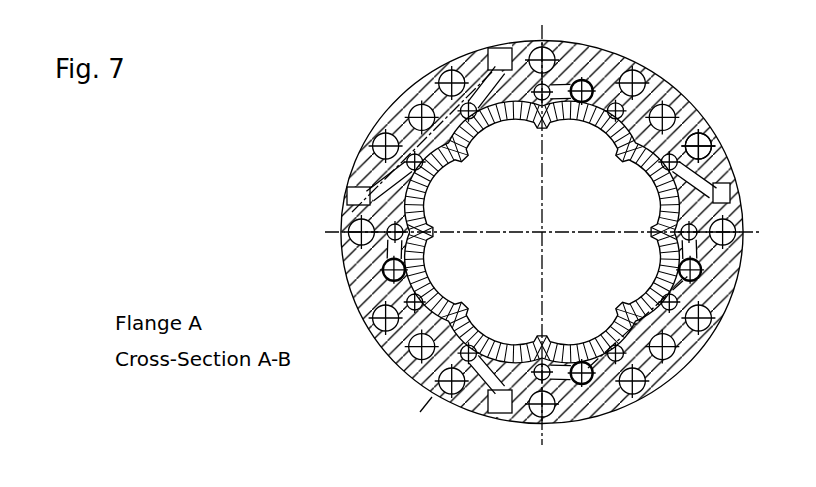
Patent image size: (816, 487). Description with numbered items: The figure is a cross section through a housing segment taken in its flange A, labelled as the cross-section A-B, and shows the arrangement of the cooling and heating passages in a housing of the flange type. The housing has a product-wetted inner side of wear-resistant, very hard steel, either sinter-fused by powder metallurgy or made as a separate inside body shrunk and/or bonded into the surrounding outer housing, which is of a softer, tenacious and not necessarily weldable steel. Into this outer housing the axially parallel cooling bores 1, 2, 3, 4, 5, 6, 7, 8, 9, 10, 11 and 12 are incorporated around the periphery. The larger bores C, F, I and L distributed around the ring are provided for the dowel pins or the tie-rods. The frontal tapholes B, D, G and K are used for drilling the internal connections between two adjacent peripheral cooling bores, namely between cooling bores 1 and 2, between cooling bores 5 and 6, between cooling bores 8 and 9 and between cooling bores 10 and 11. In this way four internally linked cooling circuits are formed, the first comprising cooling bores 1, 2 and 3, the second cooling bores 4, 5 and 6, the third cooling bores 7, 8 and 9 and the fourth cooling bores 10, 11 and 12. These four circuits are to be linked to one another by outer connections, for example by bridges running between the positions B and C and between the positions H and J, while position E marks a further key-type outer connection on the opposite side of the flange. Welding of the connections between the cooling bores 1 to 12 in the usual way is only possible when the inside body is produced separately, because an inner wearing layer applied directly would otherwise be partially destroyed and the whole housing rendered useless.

The cooling bore 1 is at (467, 352).
The cooling bore 2 is at (540, 372).
The cooling bore 3 is at (618, 353).
The cooling bore 4 is at (669, 305).
The cooling bore 5 is at (689, 228).
The cooling bore 6 is at (669, 160).
The cooling bore 7 is at (619, 113).
The cooling bore 8 is at (539, 92).
The cooling bore 9 is at (465, 113).
The cooling bore 10 is at (415, 159).
The cooling bore 11 is at (395, 227).
The cooling bore 12 is at (415, 308).
The flange A is at (498, 413).
The frontal taphole B is at (573, 379).
The bore for dowel pin or tie-rod C is at (659, 381).
The frontal taphole D is at (698, 264).
The key E is at (713, 193).
The bore for dowel pin or tie-rod F is at (698, 123).
The frontal taphole G is at (573, 86).
The bridge connection point H is at (498, 74).
The bore for dowel pin or tie-rod I is at (386, 124).
The bridge connection point J is at (375, 196).
The frontal taphole K is at (387, 262).
The bore for dowel pin or tie-rod L is at (427, 381).